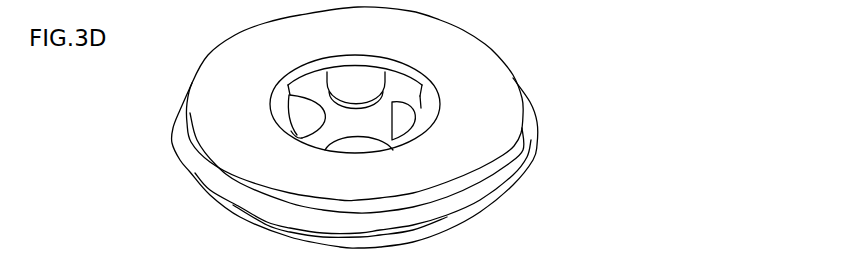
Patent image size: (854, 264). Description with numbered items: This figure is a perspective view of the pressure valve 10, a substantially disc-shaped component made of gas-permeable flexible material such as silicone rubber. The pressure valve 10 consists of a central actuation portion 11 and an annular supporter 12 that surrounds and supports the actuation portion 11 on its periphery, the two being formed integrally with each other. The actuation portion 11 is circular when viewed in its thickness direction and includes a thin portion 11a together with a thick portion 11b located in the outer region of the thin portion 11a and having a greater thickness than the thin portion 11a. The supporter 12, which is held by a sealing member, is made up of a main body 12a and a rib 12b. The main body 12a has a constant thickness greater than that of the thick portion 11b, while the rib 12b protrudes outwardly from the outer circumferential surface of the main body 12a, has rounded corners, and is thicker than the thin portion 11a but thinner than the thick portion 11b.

The pressure valve 10 is at (417, 127).
The actuation portion 11 is at (467, 104).
The thin portion 11a is at (373, 108).
The thick portion 11b is at (417, 113).
The supporter 12 is at (404, 127).
The main body 12a is at (473, 137).
The rib 12b is at (470, 197).